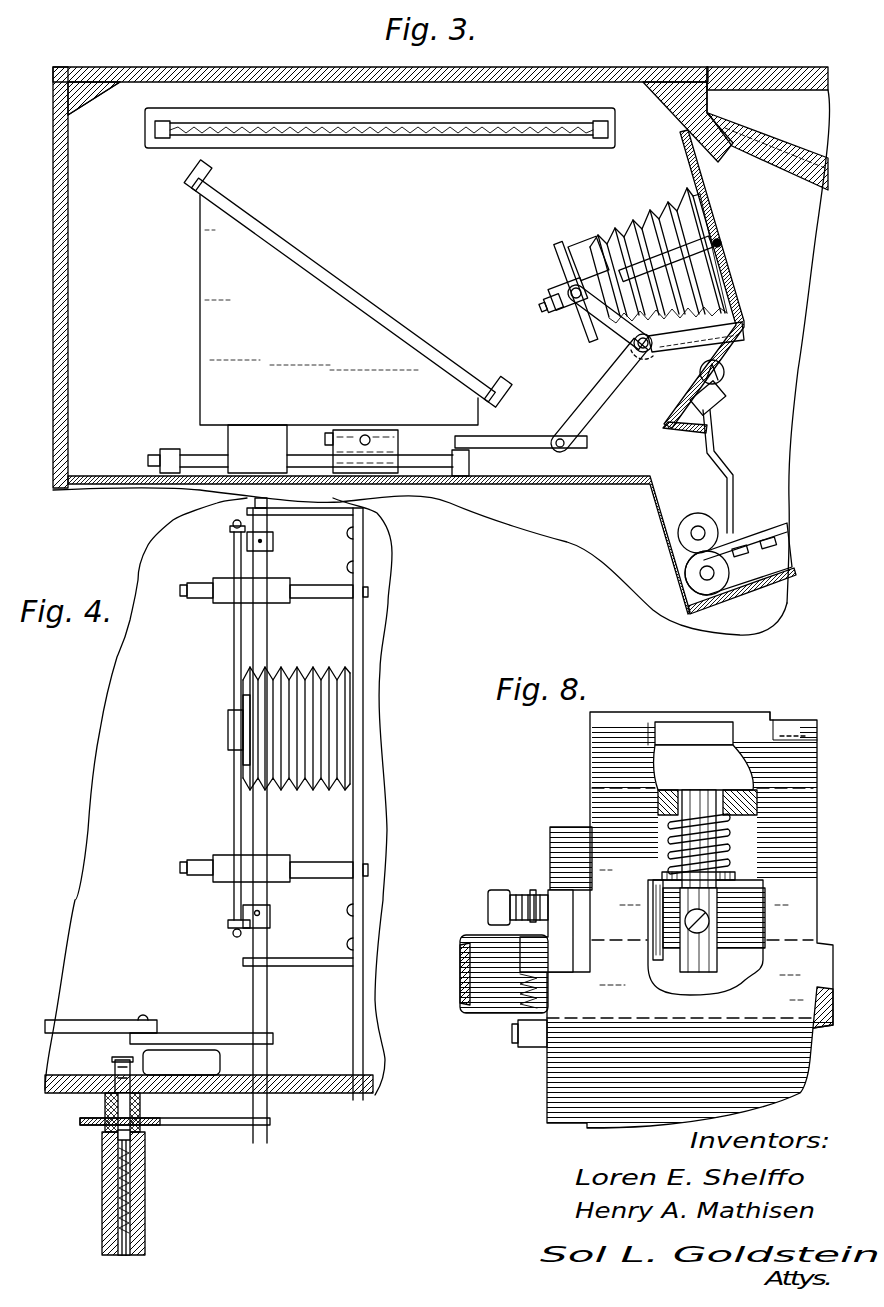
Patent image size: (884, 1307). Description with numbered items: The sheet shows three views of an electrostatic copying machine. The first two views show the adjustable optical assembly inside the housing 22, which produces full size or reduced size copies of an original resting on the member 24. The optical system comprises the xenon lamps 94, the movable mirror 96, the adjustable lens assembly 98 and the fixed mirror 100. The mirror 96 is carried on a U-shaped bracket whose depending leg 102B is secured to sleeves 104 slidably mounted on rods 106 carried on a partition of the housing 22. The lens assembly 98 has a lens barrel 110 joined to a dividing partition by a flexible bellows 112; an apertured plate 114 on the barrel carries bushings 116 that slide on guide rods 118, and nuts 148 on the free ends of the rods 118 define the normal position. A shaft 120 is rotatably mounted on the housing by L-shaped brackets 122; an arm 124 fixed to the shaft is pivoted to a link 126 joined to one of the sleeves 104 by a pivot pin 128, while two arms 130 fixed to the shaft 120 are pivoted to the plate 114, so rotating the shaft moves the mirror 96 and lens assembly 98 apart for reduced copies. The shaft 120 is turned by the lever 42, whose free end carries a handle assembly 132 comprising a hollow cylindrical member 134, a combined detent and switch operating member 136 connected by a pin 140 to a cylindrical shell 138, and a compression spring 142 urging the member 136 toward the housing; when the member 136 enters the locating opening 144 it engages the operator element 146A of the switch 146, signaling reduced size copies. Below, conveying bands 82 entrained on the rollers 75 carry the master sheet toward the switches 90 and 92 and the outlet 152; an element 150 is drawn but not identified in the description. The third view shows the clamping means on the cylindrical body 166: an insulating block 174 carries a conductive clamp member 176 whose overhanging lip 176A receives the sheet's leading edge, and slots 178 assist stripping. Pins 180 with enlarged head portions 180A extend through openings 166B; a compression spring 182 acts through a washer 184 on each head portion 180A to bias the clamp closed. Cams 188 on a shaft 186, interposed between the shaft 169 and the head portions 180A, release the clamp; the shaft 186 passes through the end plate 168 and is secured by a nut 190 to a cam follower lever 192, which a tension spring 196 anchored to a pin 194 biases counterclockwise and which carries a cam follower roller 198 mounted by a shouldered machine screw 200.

In FIG. 3, the housing 22 is at (53, 73).
In FIG. 4, the housing 22 is at (352, 1095).
In FIG. 3, the member 24 is at (272, 67).
In FIG. 4, the lever 42 is at (198, 1126).
In FIG. 3, the opposed rollers 75 is at (700, 512).
In FIG. 3, the conveying bands 82 is at (786, 528).
In FIG. 3, the switch 90 is at (744, 556).
In FIG. 3, the switch 92 is at (775, 548).
In FIG. 3, the xenon lamps 94 is at (560, 118).
In FIG. 3, the adjustable mirror 96 is at (300, 248).
In FIG. 3, the adjustable lens assembly 98 is at (574, 238).
In FIG. 4, the adjustable lens assembly 98 is at (226, 760).
In FIG. 3, the fixed mirror 100 is at (806, 180).
In FIG. 3, the depending leg 102B is at (200, 264).
In FIG. 3, the sleeves 104 is at (250, 428).
In FIG. 3, the rods 106 is at (196, 455).
In FIG. 3, the lens barrel 110 is at (572, 265).
In FIG. 4, the lens barrel 110 is at (240, 731).
In FIG. 3, the flexible bellows 112 is at (640, 212).
In FIG. 4, the flexible bellows 112 is at (315, 782).
In FIG. 3, the apertured plate 114 is at (585, 325).
In FIG. 4, the apertured plate 114 is at (233, 658).
In FIG. 4, the bushings 116 is at (222, 605).
In FIG. 3, the guide rods 118 is at (722, 246).
In FIG. 4, the guide rods 118 is at (322, 598).
In FIG. 3, the shaft 120 is at (650, 360).
In FIG. 4, the shaft 120 is at (270, 1000).
In FIG. 3, the L-shaped brackets 122 is at (674, 352).
In FIG. 4, the L-shaped brackets 122 is at (318, 516).
In FIG. 3, the arm 124 is at (600, 402).
In FIG. 4, the arm 124 is at (185, 1033).
In FIG. 3, the link 126 is at (527, 440).
In FIG. 4, the link 126 is at (88, 1020).
In FIG. 3, the pivot pin 128 is at (366, 433).
In FIG. 3, the arms 130 is at (615, 338).
In FIG. 4, the arms 130 is at (240, 537).
In FIG. 4, the handle assembly 132 is at (82, 1200).
In FIG. 4, the hollow cylindrical member 134 is at (140, 1105).
In FIG. 4, the combined detent and switch operating member 136 is at (243, 932).
In FIG. 4, the cylindrical shell 138 is at (145, 1225).
In FIG. 4, the pin 140 is at (118, 1155).
In FIG. 4, the compression spring 142 is at (148, 1180).
In FIG. 4, the locating opening 144 is at (135, 1080).
In FIG. 4, the switch 146 is at (210, 1058).
In FIG. 4, the operator element 146A is at (130, 1062).
In FIG. 3, the nuts 148 is at (545, 300).
In FIG. 4, the nuts 148 is at (183, 592).
In FIG. 3, the switch 150 is at (727, 358).
In FIG. 3, the outlet 152 is at (663, 562).
In FIG. 8, the cylindrical body 166 is at (628, 1080).
In FIG. 8, the openings 166B is at (710, 798).
In FIG. 8, the end plate 168 is at (566, 827).
In FIG. 8, the shaft 169 is at (480, 1013).
In FIG. 8, the block of insulating material 174 is at (652, 718).
In FIG. 8, the clamp member 176 is at (684, 722).
In FIG. 8, the overhanging lip 176A is at (595, 715).
In FIG. 8, the slots 178 is at (790, 720).
In FIG. 8, the pins 180 is at (670, 800).
In FIG. 8, the enlarged head portions 180A is at (740, 893).
In FIG. 8, the compression spring 182 is at (735, 840).
In FIG. 8, the washer 184 is at (735, 876).
In FIG. 8, the shaft 186 is at (758, 920).
In FIG. 8, the cams 188 is at (695, 960).
In FIG. 8, the nut 190 is at (494, 890).
In FIG. 8, the cam follower lever 192 is at (565, 890).
In FIG. 8, the pin 194 is at (532, 1048).
In FIG. 8, the tension spring 196 is at (518, 976).
In FIG. 8, the cam follower roller 198 is at (530, 907).
In FIG. 8, the shouldered machine screw 200 is at (538, 895).